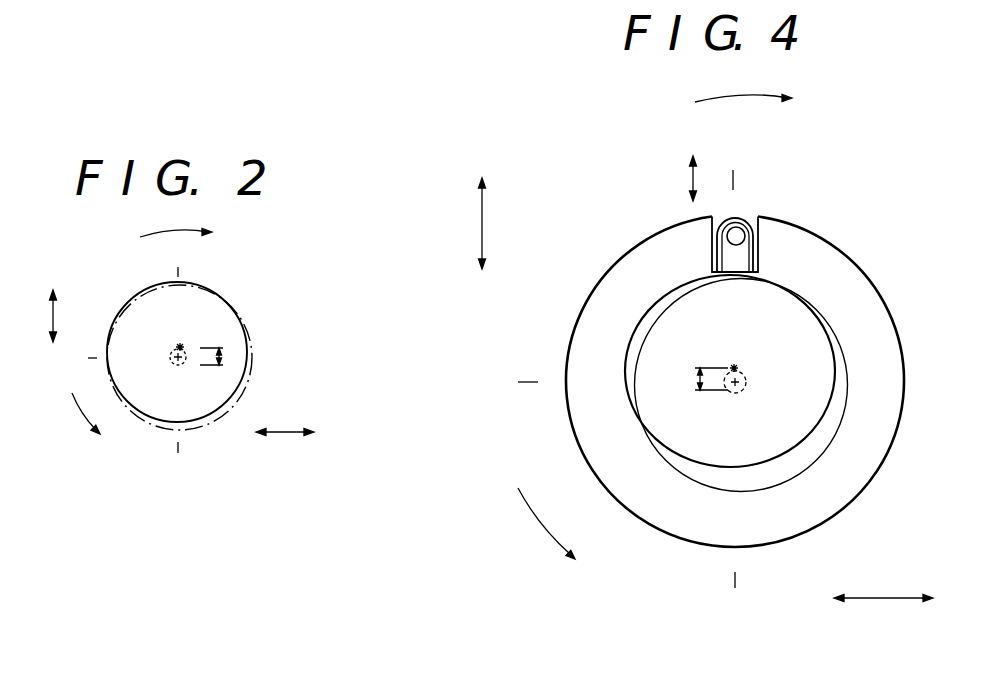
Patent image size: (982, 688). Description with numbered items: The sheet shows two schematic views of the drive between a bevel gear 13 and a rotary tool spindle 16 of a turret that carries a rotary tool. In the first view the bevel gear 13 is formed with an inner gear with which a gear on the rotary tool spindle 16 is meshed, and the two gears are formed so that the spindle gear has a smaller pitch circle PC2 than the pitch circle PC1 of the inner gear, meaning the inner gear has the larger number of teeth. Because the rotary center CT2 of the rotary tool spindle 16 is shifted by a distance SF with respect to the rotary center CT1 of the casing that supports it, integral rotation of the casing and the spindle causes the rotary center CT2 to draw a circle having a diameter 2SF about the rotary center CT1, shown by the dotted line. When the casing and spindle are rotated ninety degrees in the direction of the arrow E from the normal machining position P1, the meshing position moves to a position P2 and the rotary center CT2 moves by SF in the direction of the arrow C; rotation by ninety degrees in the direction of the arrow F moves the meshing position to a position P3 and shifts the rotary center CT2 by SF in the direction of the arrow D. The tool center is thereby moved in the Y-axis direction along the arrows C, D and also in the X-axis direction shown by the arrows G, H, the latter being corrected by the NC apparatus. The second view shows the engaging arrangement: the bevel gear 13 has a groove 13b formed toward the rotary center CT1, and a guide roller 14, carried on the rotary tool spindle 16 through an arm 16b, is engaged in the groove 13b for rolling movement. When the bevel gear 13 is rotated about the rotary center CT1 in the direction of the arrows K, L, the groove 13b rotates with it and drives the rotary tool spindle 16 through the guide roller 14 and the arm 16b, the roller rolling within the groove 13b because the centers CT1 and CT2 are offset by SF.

In FIG. 4, the bevel gear 13 is at (842, 263).
In FIG. 4, the groove 13b is at (758, 217).
In FIG. 4, the guide roller 14 is at (740, 215).
In FIG. 4, the rotary tool spindle 16 is at (818, 375).
In FIG. 4, the arm 16b is at (743, 262).
In FIG. 2, the rotary center of the casing CT1 is at (184, 356).
In FIG. 4, the rotary center of the casing CT1 is at (743, 386).
In FIG. 2, the rotary center of the rotary tool spindle CT2 is at (180, 345).
In FIG. 4, the rotary center of the rotary tool spindle CT2 is at (737, 365).
In FIG. 2, the pitch circle of the gear 13a PC1 is at (236, 394).
In FIG. 2, the pitch circle of the gear 16a PC2 is at (250, 372).
In FIG. 2, the diameter of the circle drawn by the rotary center CT2 2SF is at (198, 377).
In FIG. 4, the diameter of the circle drawn by the rotary center CT2 2SF is at (684, 381).
In FIG. 2, the normal machining position P1 is at (78, 358).
In FIG. 4, the normal machining position P1 is at (509, 385).
In FIG. 2, the position P2 is at (179, 257).
In FIG. 4, the position P2 is at (737, 162).
In FIG. 2, the position P3 is at (181, 464).
In FIG. 4, the position P3 is at (735, 600).
In FIG. 2, the arrow C is at (63, 301).
In FIG. 4, the arrow C is at (495, 216).
In FIG. 2, the arrow D is at (65, 334).
In FIG. 4, the arrow D is at (496, 262).
In FIG. 2, the arrow E is at (186, 231).
In FIG. 4, the arrow E is at (752, 103).
In FIG. 2, the arrow F is at (86, 428).
In FIG. 4, the arrow F is at (555, 533).
In FIG. 2, the arrow G is at (281, 447).
In FIG. 4, the arrow G is at (879, 613).
In FIG. 2, the arrow H is at (315, 447).
In FIG. 4, the arrow H is at (933, 613).
In FIG. 4, the arrow K is at (684, 164).
In FIG. 4, the arrow L is at (686, 197).